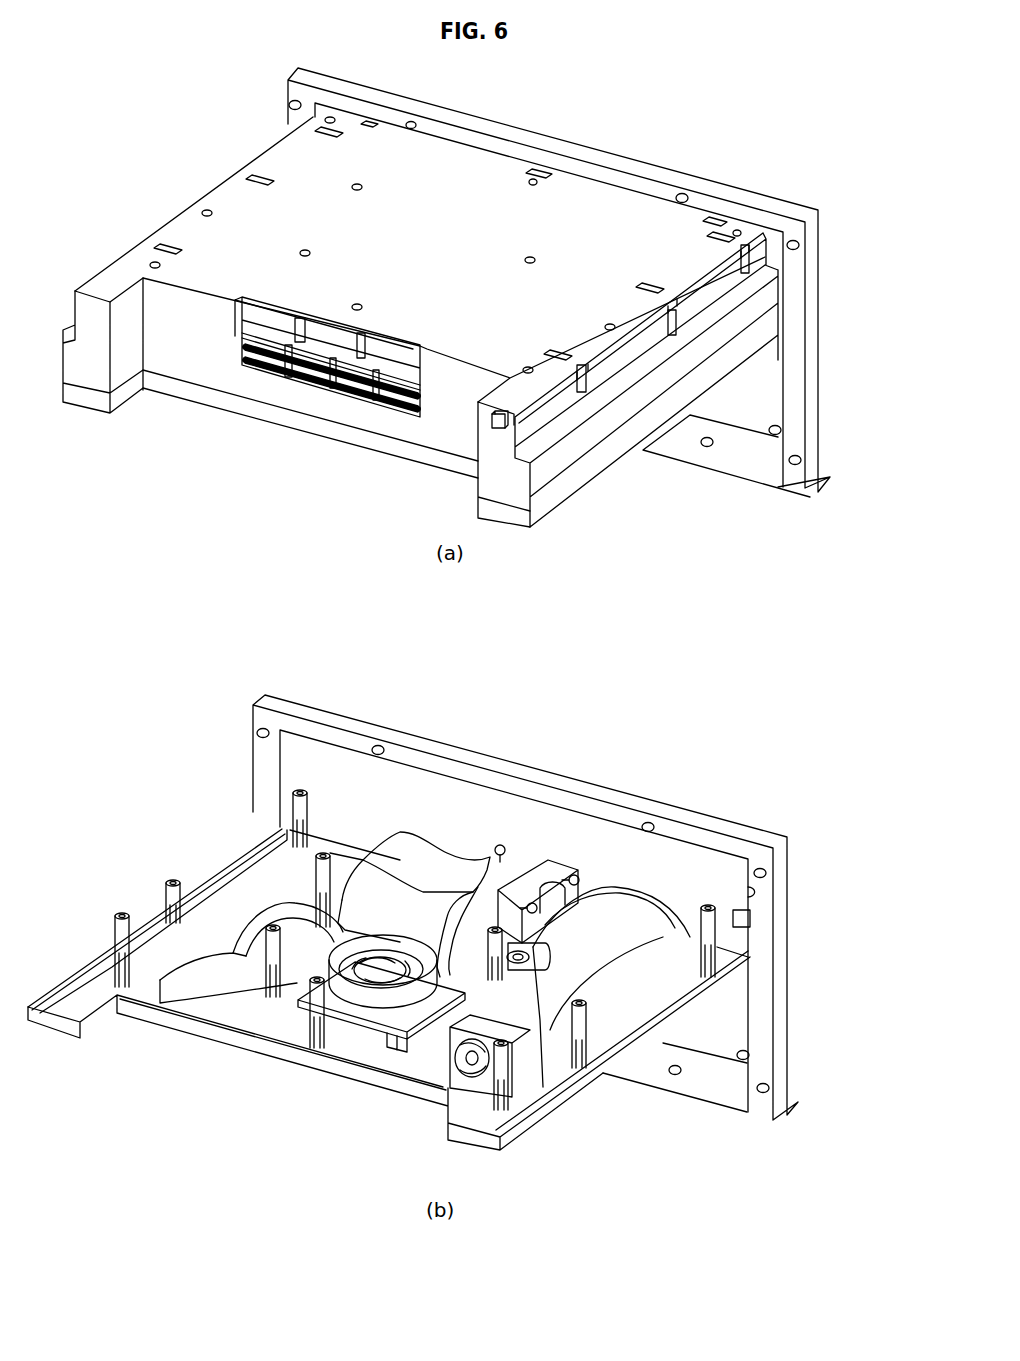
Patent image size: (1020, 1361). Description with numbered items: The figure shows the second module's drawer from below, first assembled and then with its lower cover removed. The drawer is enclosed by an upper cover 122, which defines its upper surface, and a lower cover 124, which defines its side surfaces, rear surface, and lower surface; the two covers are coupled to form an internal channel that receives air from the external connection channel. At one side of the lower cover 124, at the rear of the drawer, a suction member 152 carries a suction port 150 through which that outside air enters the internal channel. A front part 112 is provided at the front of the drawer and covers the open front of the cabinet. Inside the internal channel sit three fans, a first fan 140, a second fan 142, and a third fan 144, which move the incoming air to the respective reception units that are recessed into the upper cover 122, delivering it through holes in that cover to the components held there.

The front part 112 is at (723, 888).
The upper cover 122 is at (642, 450).
The lower cover 124 is at (585, 445).
The first fan 140 is at (363, 1003).
The second fan 142 is at (537, 887).
The third fan 144 is at (477, 1063).
The suction port 150 is at (316, 392).
The suction member 152 is at (240, 380).